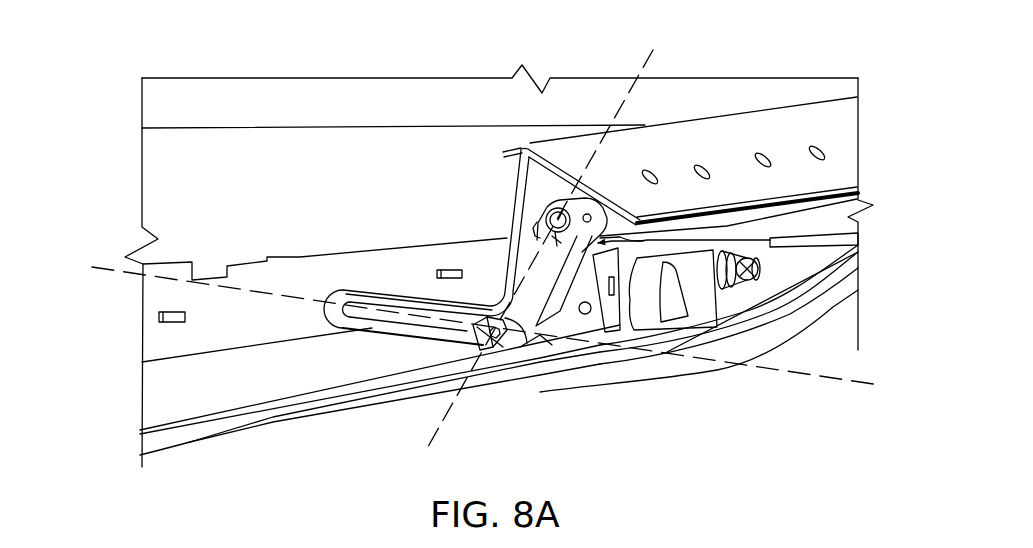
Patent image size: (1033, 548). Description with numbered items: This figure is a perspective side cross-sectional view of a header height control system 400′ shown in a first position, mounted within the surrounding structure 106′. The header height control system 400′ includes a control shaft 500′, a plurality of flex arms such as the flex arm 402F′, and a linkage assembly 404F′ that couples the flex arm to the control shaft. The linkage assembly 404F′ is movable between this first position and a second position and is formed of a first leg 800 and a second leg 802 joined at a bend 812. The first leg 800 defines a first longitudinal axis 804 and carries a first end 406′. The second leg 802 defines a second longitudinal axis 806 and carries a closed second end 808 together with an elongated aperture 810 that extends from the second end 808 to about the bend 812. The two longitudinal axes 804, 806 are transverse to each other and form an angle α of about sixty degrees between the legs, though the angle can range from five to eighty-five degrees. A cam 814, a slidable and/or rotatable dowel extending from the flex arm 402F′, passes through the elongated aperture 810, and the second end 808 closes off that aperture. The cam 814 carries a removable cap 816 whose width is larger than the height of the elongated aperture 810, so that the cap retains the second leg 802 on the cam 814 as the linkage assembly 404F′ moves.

The aircraft structure / fuselage 106′ is at (140, 163).
The first end 406′ is at (863, 200).
The flex arm 402F′ is at (862, 290).
The linkage assembly 404F′ is at (541, 345).
The header height control system 400′ is at (677, 390).
The control shaft 500′ is at (550, 199).
The first leg 800 is at (515, 245).
The second leg 802 is at (397, 283).
The first longitudinal axis 804 is at (655, 50).
The second longitudinal axis 806 is at (102, 265).
The second end 808 is at (333, 281).
The elongated aperture 810 is at (402, 331).
The bend 812 is at (553, 313).
The cam 814 is at (530, 348).
The cap 816 is at (500, 329).